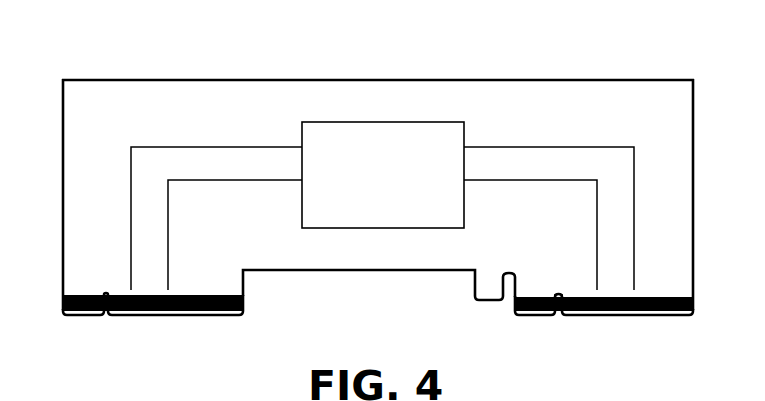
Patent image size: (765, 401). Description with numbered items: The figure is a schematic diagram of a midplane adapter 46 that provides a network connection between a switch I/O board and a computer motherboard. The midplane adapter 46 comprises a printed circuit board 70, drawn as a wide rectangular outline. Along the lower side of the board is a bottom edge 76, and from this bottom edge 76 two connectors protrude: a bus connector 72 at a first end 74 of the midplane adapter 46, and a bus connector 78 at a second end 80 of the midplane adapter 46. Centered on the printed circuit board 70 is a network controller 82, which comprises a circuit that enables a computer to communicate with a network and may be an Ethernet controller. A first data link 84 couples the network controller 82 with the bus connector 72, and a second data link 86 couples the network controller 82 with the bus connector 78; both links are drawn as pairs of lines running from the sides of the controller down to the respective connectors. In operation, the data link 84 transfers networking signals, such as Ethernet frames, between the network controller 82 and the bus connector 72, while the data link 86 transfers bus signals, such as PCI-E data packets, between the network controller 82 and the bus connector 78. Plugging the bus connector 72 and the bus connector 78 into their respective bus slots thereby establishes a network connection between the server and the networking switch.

The midplane adapter 46 is at (673, 52).
The printed circuit board 70 is at (520, 88).
The bus connector 72 is at (243, 325).
The first end 74 is at (63, 162).
The bottom edge 76 is at (365, 272).
The bus connector 78 is at (693, 325).
The second end 80 is at (693, 162).
The network controller 82 is at (408, 122).
The first data link 84 is at (198, 147).
The second data link 86 is at (562, 147).